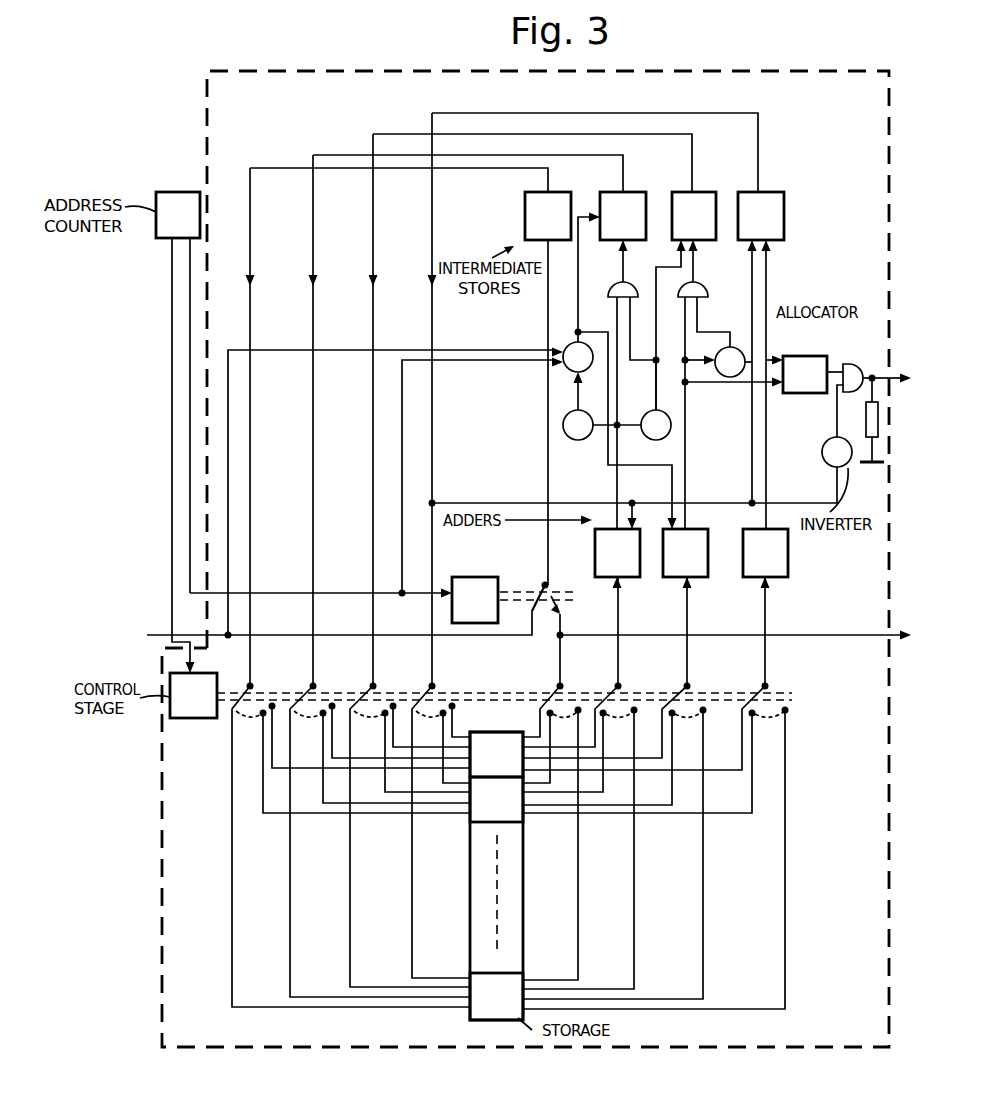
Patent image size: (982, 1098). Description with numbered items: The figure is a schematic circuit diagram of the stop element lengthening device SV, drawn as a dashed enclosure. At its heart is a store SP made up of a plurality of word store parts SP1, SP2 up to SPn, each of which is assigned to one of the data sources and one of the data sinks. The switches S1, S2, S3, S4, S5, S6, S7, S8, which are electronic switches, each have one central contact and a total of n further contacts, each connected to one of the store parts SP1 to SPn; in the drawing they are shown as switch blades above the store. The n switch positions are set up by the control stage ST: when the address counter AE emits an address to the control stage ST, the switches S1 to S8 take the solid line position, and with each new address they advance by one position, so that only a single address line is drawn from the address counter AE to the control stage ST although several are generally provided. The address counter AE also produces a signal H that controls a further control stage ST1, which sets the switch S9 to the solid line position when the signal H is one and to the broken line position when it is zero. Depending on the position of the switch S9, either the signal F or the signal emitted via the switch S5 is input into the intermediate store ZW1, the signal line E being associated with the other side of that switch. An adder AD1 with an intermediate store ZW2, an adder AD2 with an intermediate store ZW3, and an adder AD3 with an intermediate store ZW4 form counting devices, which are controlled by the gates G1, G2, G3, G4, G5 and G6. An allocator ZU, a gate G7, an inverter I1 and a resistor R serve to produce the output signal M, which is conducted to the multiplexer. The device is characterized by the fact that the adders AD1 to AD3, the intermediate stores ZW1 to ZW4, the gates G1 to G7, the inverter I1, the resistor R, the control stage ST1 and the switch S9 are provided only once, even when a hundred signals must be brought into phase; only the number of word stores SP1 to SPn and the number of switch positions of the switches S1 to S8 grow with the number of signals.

The stop element lengthening device SV is at (690, 73).
The address counter AE is at (200, 192).
The control stage ST is at (213, 718).
The control stage ST1 is at (455, 582).
The switch S1 is at (348, 587).
The switch S2 is at (378, 576).
The switch S3 is at (408, 560).
The switch S4 is at (437, 545).
The switch S5 is at (552, 797).
The switch S6 is at (580, 783).
The switch S7 is at (615, 788).
The switch S8 is at (656, 793).
The switch S9 is at (538, 591).
The intermediate store ZW1 is at (525, 228).
The intermediate store ZW2 is at (621, 192).
The intermediate store ZW3 is at (686, 192).
The intermediate store ZW4 is at (783, 236).
The gate G1 is at (452, 424).
The gate G2 is at (706, 296).
The gate G3 is at (648, 400).
The gate G4 is at (728, 347).
The gate G5 is at (610, 294).
The gate G6 is at (596, 406).
The gate G7 is at (854, 387).
The allocator ZU is at (830, 340).
The inverter I1 is at (642, 472).
The resistor R is at (866, 420).
The signal M is at (888, 350).
The signal E is at (852, 636).
The signal F is at (339, 624).
The signal H is at (321, 583).
The adder AD1 is at (595, 565).
The adder AD2 is at (700, 580).
The adder AD3 is at (788, 568).
The store SP is at (496, 862).
The store part SP1 is at (496, 754).
The store part SP2 is at (496, 799).
The store part SPn is at (496, 996).